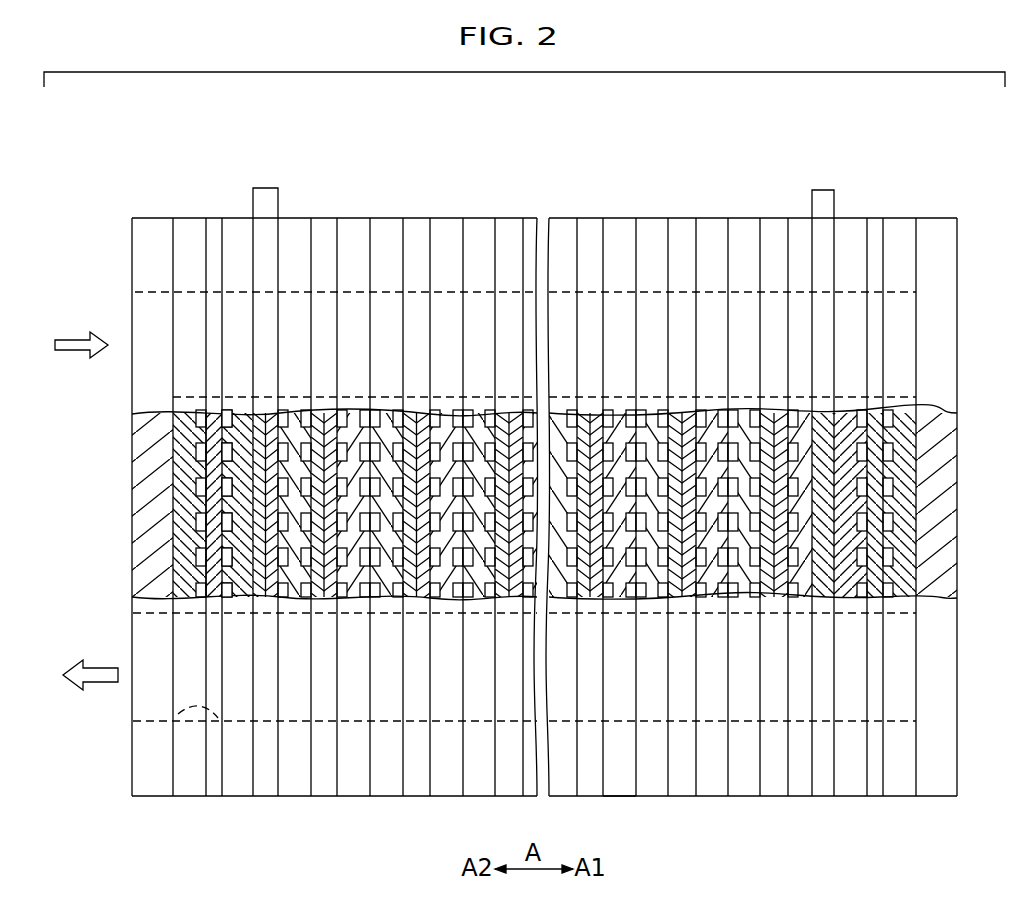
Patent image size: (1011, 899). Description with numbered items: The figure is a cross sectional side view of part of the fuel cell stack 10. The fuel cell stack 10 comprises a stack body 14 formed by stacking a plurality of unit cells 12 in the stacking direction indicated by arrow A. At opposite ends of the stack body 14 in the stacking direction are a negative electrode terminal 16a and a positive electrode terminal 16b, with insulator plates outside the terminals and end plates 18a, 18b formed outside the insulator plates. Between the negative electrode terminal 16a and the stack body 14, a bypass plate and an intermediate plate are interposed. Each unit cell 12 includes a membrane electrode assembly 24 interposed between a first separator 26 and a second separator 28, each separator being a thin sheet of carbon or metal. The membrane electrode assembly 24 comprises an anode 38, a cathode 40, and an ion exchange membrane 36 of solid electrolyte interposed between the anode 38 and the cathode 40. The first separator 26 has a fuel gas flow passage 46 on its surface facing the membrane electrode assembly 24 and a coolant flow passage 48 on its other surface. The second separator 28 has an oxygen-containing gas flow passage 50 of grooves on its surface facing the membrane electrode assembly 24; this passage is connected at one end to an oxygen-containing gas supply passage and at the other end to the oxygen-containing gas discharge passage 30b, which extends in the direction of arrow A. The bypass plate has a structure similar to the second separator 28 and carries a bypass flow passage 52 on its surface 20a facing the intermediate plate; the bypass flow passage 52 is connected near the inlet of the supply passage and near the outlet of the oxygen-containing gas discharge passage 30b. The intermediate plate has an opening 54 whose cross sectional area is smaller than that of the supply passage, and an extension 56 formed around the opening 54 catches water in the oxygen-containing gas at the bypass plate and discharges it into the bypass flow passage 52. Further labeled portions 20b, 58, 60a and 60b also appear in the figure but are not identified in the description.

The fuel cell stack 10 is at (465, 159).
The unit cell 12 is at (599, 214).
The stack body 14 is at (705, 137).
The negative electrode terminal 16a is at (266, 197).
The positive electrode terminal 16b is at (825, 197).
The end plate 18a is at (203, 814).
The end plate 18b is at (869, 816).
The surface of bypass plate 20a is at (146, 226).
The second end plate 20b is at (943, 228).
The membrane electrode assembly 24 is at (338, 804).
The first separator 26 is at (308, 808).
The second separator 28 is at (373, 804).
The oxygen-containing gas discharge passage 30b is at (178, 712).
The ion exchange membrane 36 is at (770, 558).
The anode 38 is at (800, 555).
The cathode 40 is at (765, 446).
The fuel gas flow passage 46 is at (760, 598).
The coolant flow passage 48 is at (792, 488).
The oxygen-containing gas flow passage 50 is at (190, 226).
The bypass flow passage 52 is at (214, 228).
The opening 54 is at (232, 226).
The extension 56 is at (192, 557).
The connection portion 58 is at (228, 523).
The first coolant passage 60a is at (152, 298).
The second coolant passage 60b is at (160, 618).